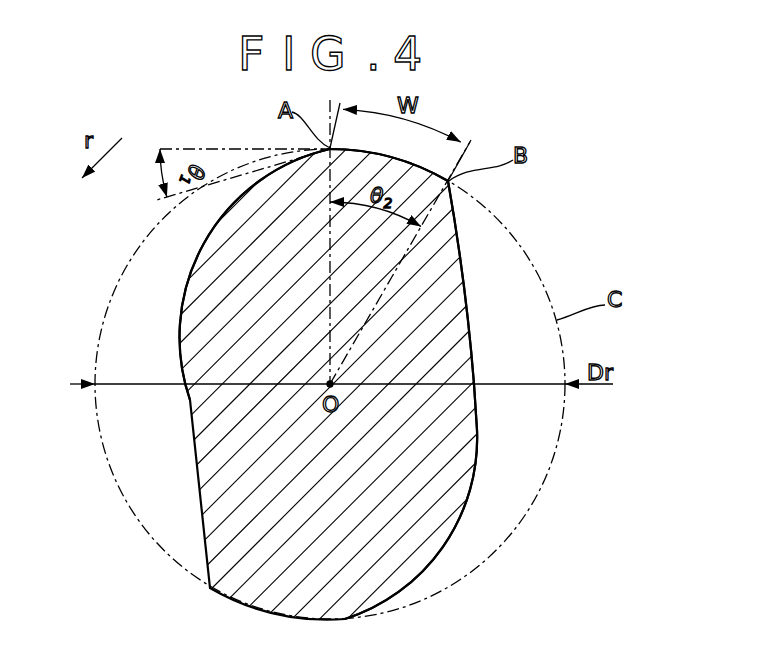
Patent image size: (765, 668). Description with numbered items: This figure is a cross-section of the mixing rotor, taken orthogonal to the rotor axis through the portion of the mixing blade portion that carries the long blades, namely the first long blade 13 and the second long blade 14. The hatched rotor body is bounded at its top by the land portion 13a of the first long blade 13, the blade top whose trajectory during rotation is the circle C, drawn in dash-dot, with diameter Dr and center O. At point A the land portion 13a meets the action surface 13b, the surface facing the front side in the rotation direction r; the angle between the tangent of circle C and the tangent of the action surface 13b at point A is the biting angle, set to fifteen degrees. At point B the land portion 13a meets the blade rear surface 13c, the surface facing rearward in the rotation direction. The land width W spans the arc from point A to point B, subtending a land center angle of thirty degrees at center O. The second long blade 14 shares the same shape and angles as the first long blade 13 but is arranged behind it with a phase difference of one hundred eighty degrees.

The first long blade 13 is at (487, 233).
The land portion 13a is at (408, 156).
The action surface 13b is at (197, 246).
The blade rear surface 13c is at (460, 283).
The second long blade 14 is at (442, 570).